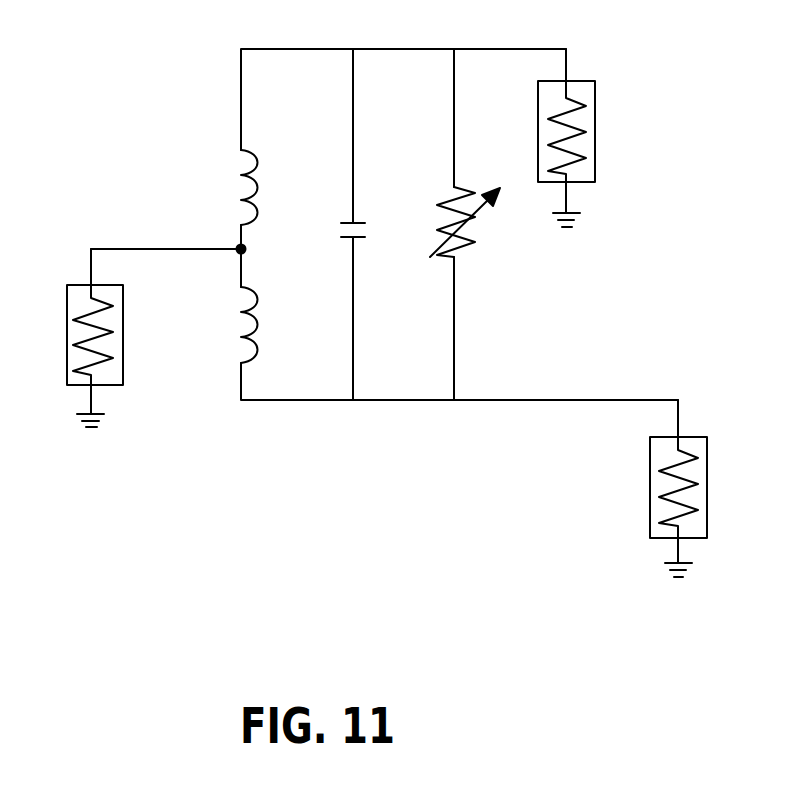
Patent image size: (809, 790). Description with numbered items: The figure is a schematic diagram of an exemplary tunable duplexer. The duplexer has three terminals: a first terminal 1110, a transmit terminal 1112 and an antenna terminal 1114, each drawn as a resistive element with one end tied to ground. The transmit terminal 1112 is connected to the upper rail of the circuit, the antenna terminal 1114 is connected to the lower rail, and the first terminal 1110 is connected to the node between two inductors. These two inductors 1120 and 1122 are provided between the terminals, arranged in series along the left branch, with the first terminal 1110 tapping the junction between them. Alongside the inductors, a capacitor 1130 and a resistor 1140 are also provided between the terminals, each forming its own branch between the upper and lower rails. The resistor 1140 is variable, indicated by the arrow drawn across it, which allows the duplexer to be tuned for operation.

The first terminal 1110 is at (119, 337).
The transmit terminal 1112 is at (593, 136).
The antenna terminal 1114 is at (705, 488).
The inductor 1120 is at (246, 173).
The inductor 1122 is at (246, 309).
The capacitor 1130 is at (369, 249).
The resistor 1140 is at (468, 249).